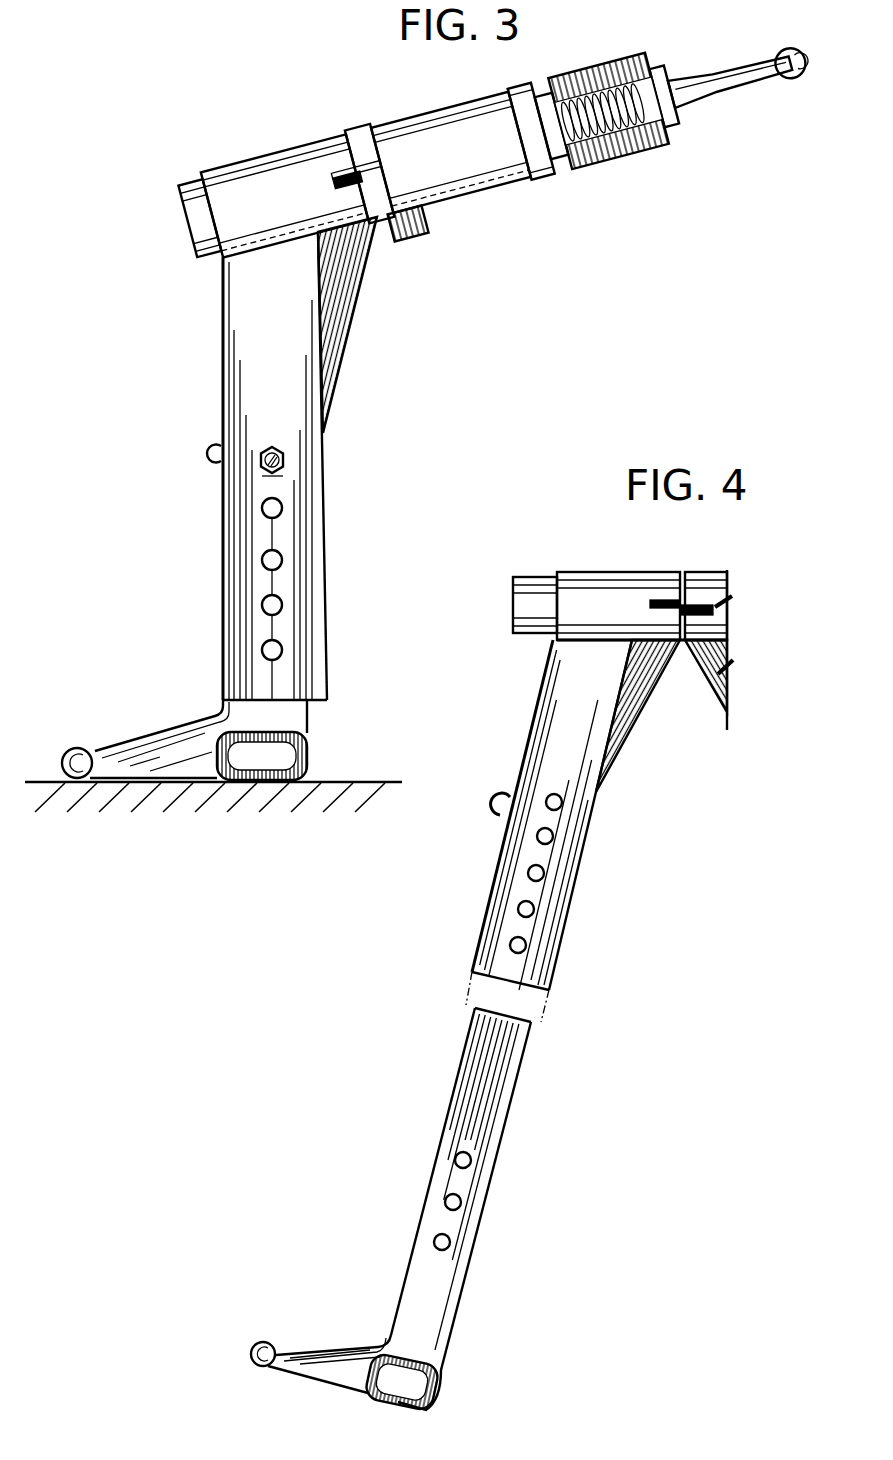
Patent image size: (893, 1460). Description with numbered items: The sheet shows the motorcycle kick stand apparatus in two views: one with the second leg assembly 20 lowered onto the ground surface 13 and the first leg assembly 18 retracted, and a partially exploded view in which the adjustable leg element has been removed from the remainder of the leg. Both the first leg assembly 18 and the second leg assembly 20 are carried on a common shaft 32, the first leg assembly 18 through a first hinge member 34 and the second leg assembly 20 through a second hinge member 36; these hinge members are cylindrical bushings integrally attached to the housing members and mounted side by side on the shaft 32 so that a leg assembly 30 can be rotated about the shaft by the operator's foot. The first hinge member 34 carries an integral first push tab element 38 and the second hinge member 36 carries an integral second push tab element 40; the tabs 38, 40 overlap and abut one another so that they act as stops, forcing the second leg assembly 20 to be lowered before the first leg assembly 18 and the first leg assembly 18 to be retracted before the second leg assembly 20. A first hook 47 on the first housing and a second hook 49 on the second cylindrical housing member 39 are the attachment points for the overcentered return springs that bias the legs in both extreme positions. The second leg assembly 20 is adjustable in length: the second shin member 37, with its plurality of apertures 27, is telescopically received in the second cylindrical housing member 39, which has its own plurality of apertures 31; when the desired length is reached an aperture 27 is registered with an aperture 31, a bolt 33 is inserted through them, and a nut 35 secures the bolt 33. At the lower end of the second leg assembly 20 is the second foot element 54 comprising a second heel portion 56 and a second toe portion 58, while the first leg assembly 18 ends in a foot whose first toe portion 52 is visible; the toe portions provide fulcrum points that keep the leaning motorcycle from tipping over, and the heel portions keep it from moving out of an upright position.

In FIG. 3, the ground surface 13 is at (136, 800).
In FIG. 3, the first leg assembly 18 is at (660, 168).
In FIG. 3, the second leg assembly 20 is at (200, 388).
In FIG. 4, the second leg assembly 20 is at (595, 1027).
In FIG. 4, the apertures 27 is at (450, 1243).
In FIG. 3, the leg assembly 30 is at (277, 382).
In FIG. 4, the leg assembly 30 is at (495, 934).
In FIG. 3, the apertures 31 is at (268, 560).
In FIG. 3, the common shaft 32 is at (521, 178).
In FIG. 3, the bolt 33 is at (286, 452).
In FIG. 3, the first hinge member 34 is at (432, 118).
In FIG. 3, the nut 35 is at (282, 478).
In FIG. 3, the second hinge member 36 is at (262, 173).
In FIG. 4, the second hinge member 36 is at (600, 585).
In FIG. 4, the second shin member 37 is at (500, 1100).
In FIG. 3, the first push tab element 38 is at (422, 229).
In FIG. 4, the first push tab element 38 is at (700, 612).
In FIG. 3, the second cylindrical housing member 39 is at (221, 326).
In FIG. 4, the second cylindrical housing member 39 is at (530, 748).
In FIG. 3, the second push tab element 40 is at (345, 172).
In FIG. 4, the second push tab element 40 is at (668, 606).
In FIG. 3, the first hook 47 is at (579, 72).
In FIG. 3, the second hook 49 is at (212, 452).
In FIG. 4, the second hook 49 is at (490, 806).
In FIG. 3, the first toe portion 52 is at (808, 62).
In FIG. 3, the second foot element 54 is at (300, 733).
In FIG. 4, the second foot element 54 is at (428, 1365).
In FIG. 3, the second heel portion 56 is at (300, 782).
In FIG. 4, the second heel portion 56 is at (430, 1398).
In FIG. 3, the second toe portion 58 is at (77, 752).
In FIG. 4, the second toe portion 58 is at (251, 1352).